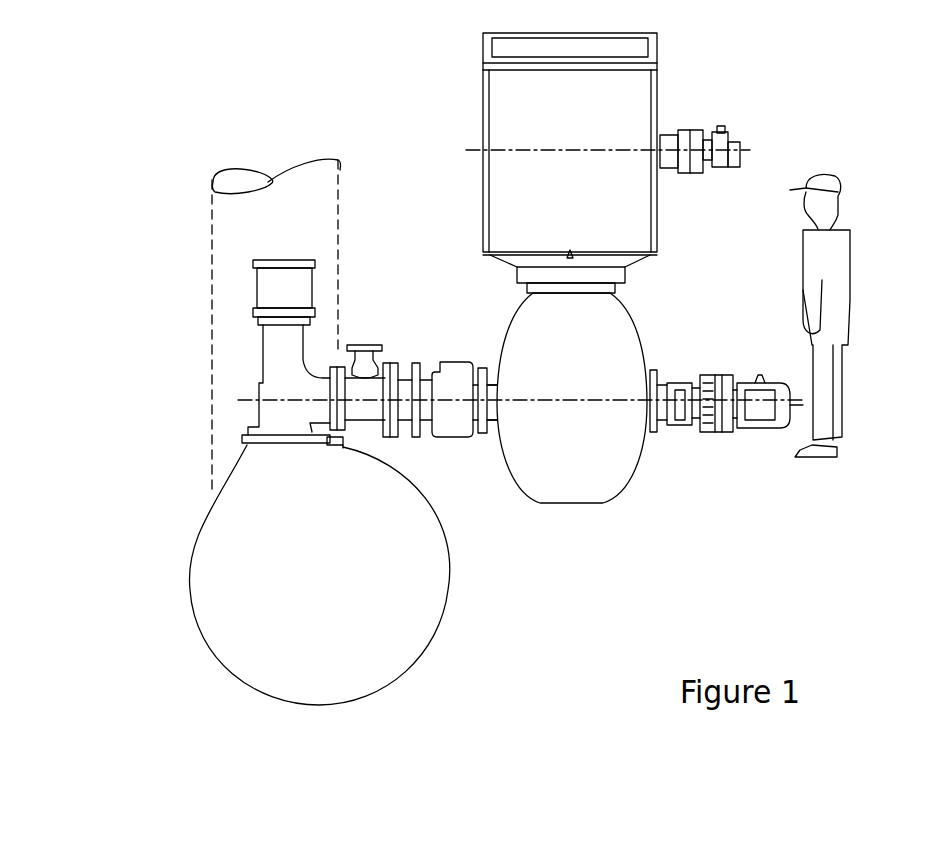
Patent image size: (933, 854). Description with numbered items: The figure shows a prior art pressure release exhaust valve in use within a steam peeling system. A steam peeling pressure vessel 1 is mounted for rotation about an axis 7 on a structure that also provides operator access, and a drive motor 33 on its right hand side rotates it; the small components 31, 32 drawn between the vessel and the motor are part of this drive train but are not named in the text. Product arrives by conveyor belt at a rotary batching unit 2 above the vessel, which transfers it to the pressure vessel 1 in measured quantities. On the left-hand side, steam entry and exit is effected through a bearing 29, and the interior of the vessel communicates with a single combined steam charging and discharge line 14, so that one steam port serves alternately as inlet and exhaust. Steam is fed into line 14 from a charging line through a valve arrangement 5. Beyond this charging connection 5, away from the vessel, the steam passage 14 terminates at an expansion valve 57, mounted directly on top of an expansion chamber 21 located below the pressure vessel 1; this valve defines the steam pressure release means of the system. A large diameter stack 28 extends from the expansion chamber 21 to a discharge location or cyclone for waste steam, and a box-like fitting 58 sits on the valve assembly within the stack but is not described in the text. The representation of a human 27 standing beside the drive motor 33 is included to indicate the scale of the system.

The steam peeling pressure vessel 1 is at (607, 487).
The rotary batching unit 2 is at (637, 103).
The valve arrangement 5 is at (355, 342).
The axis 7 is at (571, 401).
The single combined steam charging and discharge line 14 is at (410, 458).
The expansion chamber 21 is at (348, 575).
The human figure 27 is at (857, 316).
The large diameter stack 28 is at (219, 324).
The bearing 29 is at (447, 378).
The coupling block 31 is at (680, 430).
The drive motor 32 is at (727, 377).
The drive motor 33 is at (725, 132).
The expansion valve 57 is at (282, 415).
The feed box 58 is at (268, 292).